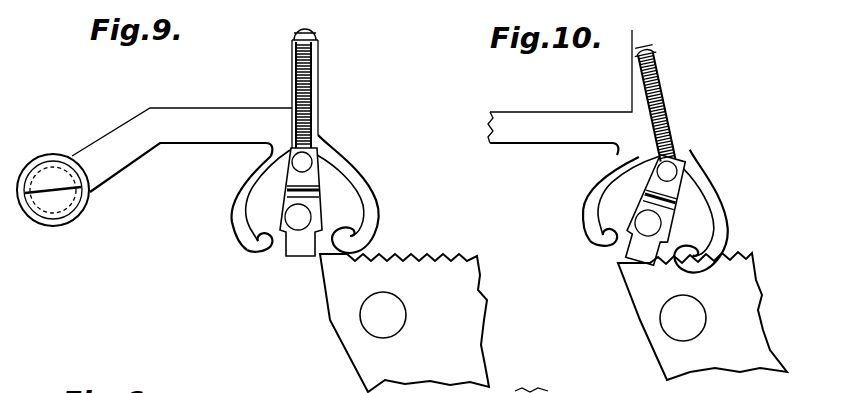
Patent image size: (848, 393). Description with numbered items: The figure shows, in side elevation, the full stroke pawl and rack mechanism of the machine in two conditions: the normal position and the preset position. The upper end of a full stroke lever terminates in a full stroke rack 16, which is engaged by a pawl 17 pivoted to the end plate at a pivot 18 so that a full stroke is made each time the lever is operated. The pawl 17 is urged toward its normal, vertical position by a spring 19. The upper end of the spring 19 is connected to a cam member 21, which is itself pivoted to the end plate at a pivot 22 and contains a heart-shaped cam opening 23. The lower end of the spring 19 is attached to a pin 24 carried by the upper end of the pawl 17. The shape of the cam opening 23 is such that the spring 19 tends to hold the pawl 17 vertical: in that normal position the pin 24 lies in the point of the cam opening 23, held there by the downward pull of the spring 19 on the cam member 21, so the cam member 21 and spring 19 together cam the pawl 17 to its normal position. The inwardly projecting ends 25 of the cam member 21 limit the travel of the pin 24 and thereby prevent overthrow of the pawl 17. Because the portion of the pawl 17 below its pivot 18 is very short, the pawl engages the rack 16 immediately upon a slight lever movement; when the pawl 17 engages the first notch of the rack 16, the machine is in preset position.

In FIG. 9, the full stroke rack 16 is at (345, 260).
In FIG. 10, the full stroke rack 16 is at (640, 287).
In FIG. 9, the pawl 17 is at (295, 250).
In FIG. 10, the pawl 17 is at (627, 253).
In FIG. 9, the pivot 18 is at (298, 217).
In FIG. 10, the pivot 18 is at (648, 223).
In FIG. 9, the spring 19 is at (313, 63).
In FIG. 10, the spring 19 is at (673, 118).
In FIG. 9, the cam member 21 is at (178, 128).
In FIG. 10, the cam member 21 is at (555, 123).
In FIG. 9, the pivot of cam member 22 is at (53, 175).
In FIG. 9, the heart-shaped cam opening 23 is at (355, 195).
In FIG. 10, the heart-shaped cam opening 23 is at (614, 190).
In FIG. 9, the pin 24 is at (306, 162).
In FIG. 10, the pin 24 is at (670, 172).
In FIG. 9, the inwardly projecting end 25 is at (368, 238).
In FIG. 10, the inwardly projecting end 25 is at (705, 228).